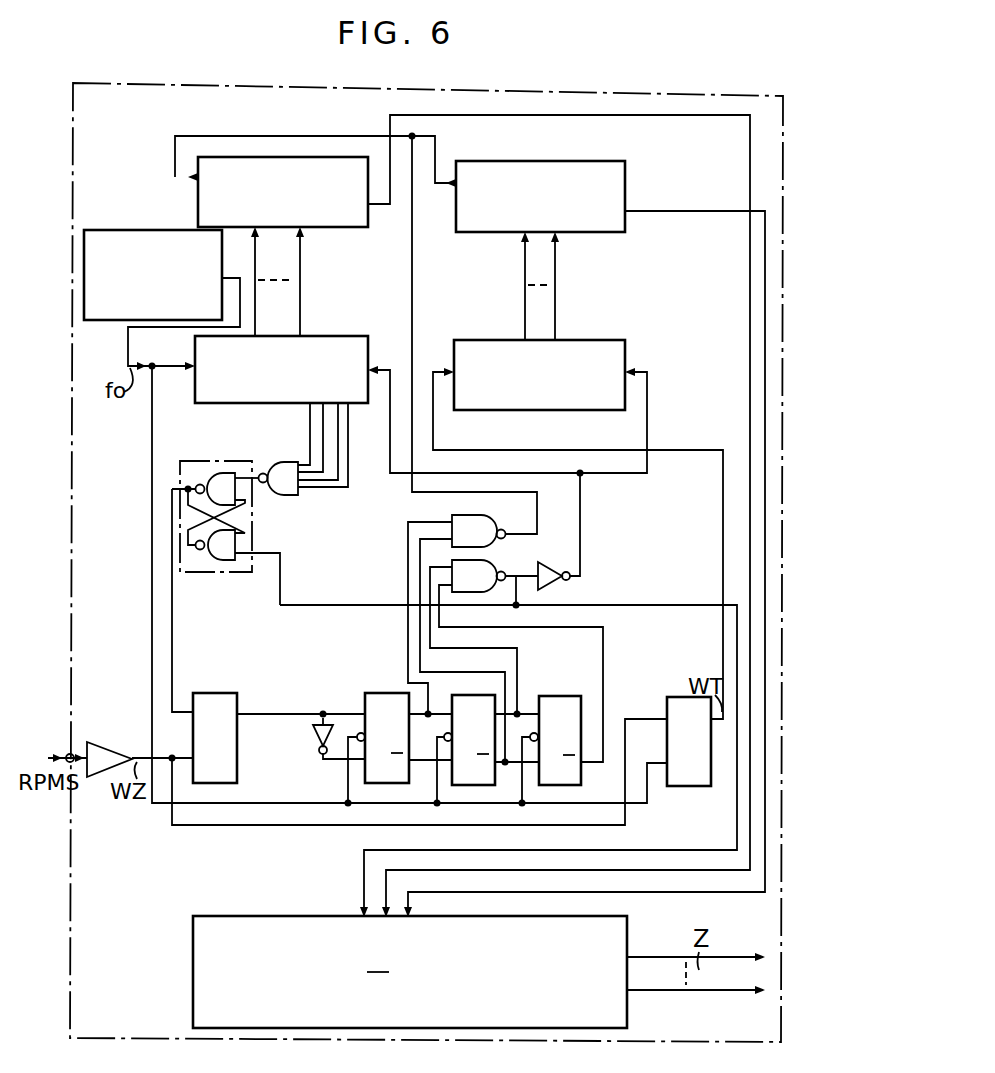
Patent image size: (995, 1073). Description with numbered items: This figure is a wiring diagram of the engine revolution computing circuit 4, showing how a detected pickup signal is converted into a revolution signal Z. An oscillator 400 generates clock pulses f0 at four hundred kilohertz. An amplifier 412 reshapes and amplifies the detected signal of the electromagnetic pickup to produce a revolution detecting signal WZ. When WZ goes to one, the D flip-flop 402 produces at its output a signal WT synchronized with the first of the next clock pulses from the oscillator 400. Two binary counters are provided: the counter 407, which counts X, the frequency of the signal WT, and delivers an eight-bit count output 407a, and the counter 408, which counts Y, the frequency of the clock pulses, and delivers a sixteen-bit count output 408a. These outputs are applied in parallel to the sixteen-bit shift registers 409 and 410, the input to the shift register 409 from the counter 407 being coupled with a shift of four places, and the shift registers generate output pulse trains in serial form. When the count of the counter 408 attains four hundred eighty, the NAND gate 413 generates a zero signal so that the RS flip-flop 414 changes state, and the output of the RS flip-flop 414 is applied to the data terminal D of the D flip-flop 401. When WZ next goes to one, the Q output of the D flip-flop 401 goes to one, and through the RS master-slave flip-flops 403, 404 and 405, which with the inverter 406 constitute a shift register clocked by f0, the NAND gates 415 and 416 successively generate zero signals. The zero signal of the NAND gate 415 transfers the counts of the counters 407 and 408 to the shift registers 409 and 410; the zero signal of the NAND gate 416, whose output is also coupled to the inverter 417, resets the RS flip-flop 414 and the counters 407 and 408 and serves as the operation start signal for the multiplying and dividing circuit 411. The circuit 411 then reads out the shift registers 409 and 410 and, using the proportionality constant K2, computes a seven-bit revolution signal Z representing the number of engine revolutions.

The engine revolution computing circuit 4 is at (562, 92).
The oscillator 400 is at (103, 320).
The D flip-flop 401 is at (213, 693).
The D flip-flop 402 is at (683, 697).
The RS master-slave flip-flop 403 is at (378, 693).
The RS master-slave flip-flop 404 is at (449, 696).
The RS master-slave flip-flop 405 is at (551, 696).
The inverter 406 is at (309, 740).
The binary counter 407 is at (575, 340).
The 8-bit count output 407a is at (550, 285).
The binary counter 408 is at (326, 336).
The 16-bit count output 408a is at (293, 280).
The 16-bit shift register 409 is at (551, 161).
The 16-bit shift register 410 is at (198, 201).
The multiplying and dividing circuit 411 is at (627, 920).
The amplifier 412 is at (105, 742).
The NAND gate 413 is at (283, 462).
The RS flip-flop 414 is at (236, 460).
The NAND gate 415 is at (496, 511).
The NAND gate 416 is at (487, 556).
The inverter 417 is at (552, 563).